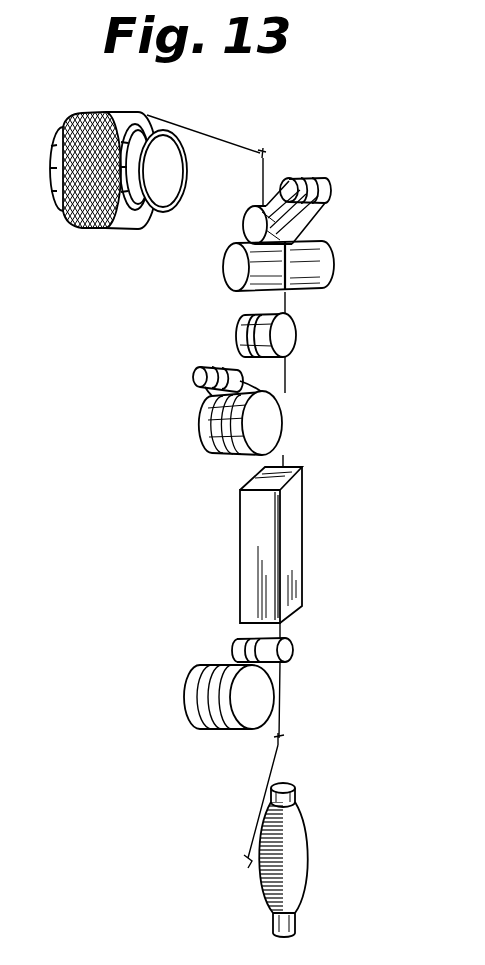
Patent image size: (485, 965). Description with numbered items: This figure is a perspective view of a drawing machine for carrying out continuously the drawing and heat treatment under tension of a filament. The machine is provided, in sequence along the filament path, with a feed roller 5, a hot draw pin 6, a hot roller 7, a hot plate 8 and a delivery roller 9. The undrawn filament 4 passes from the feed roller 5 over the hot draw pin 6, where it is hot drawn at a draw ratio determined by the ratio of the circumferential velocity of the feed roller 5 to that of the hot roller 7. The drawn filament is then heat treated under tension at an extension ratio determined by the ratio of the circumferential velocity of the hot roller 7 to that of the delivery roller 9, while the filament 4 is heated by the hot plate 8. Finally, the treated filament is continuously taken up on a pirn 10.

The undrawn filament 4 is at (108, 113).
The feed roller 5 is at (318, 243).
The hot draw pin 6 is at (291, 342).
The hot roller 7 is at (277, 428).
The hot plate 8 is at (296, 537).
The delivery roller 9 is at (215, 693).
The pirn 10 is at (297, 838).